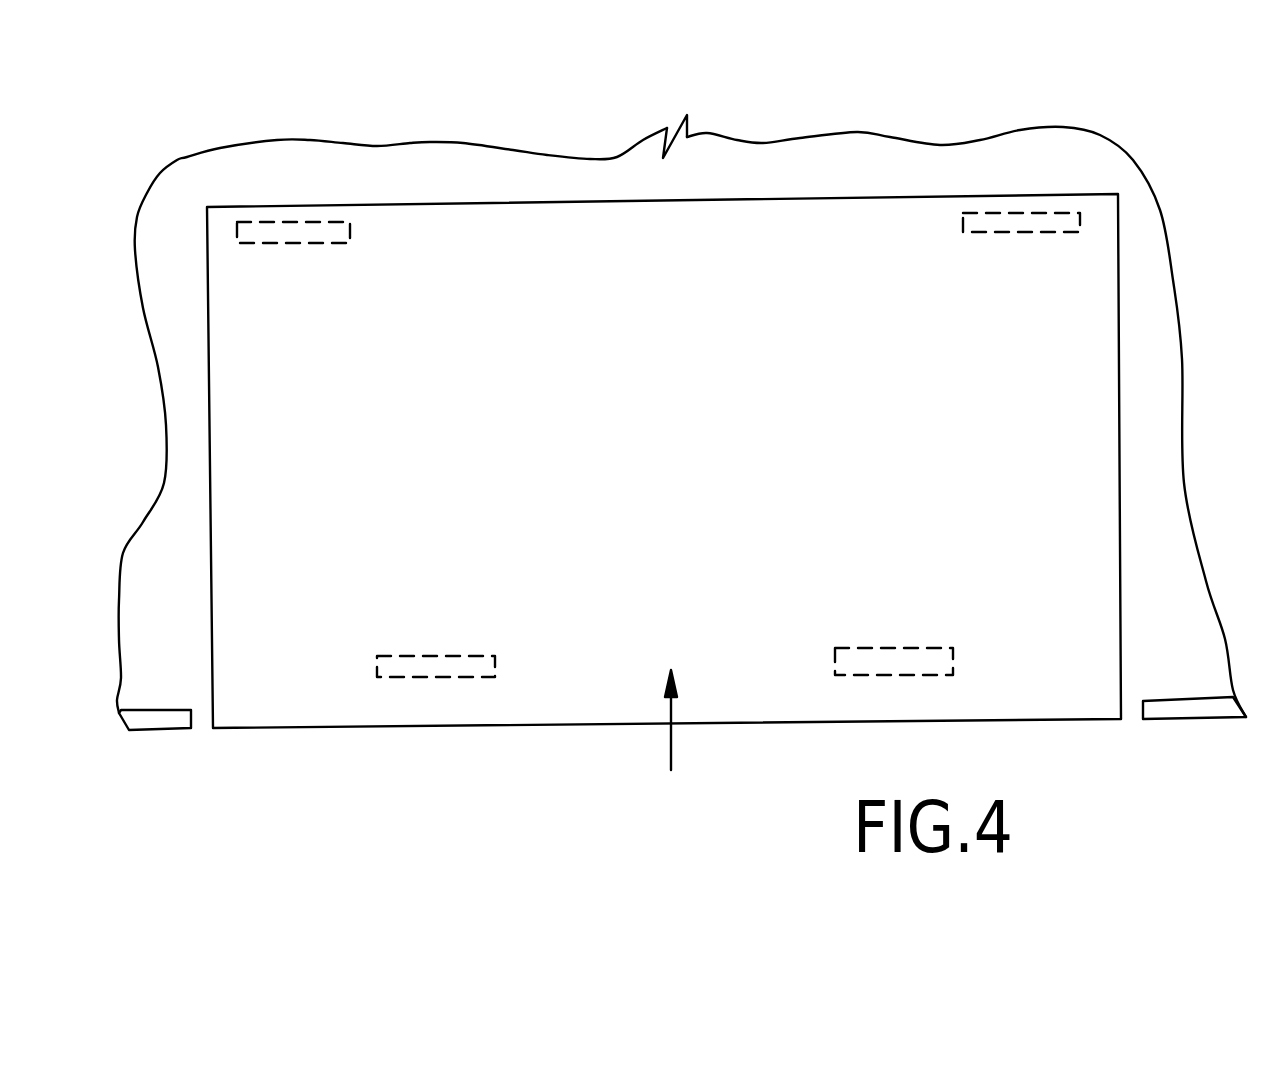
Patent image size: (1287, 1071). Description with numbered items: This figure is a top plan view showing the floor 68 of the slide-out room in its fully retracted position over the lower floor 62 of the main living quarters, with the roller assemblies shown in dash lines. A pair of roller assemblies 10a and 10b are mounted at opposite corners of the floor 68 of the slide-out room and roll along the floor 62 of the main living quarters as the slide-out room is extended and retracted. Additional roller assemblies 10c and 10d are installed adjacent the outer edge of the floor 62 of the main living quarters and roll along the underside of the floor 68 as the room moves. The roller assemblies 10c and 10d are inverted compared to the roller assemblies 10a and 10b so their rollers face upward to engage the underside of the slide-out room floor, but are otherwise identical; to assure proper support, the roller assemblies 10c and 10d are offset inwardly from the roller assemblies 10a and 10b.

The roller assembly 10a is at (310, 225).
The roller assembly 10b is at (1005, 210).
The roller assembly 10c is at (447, 665).
The roller assembly 10d is at (905, 657).
The lower floor 62 is at (1143, 338).
The floor 68 is at (710, 466).